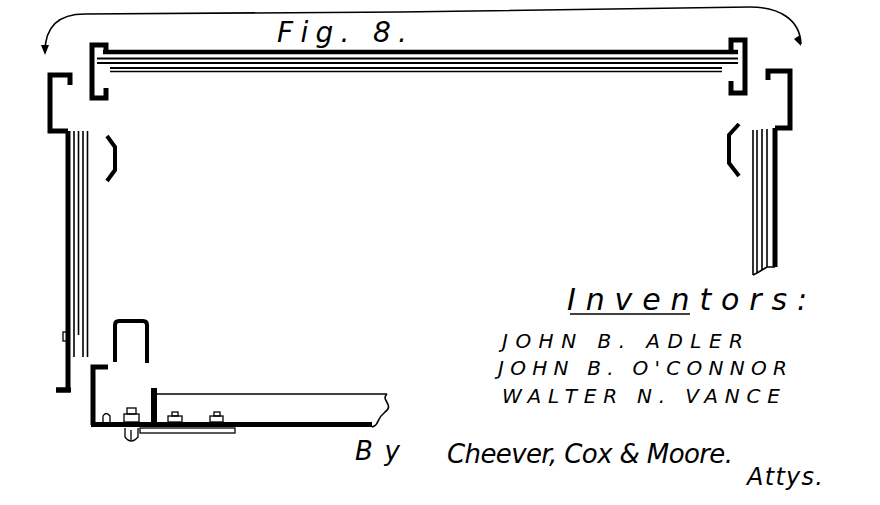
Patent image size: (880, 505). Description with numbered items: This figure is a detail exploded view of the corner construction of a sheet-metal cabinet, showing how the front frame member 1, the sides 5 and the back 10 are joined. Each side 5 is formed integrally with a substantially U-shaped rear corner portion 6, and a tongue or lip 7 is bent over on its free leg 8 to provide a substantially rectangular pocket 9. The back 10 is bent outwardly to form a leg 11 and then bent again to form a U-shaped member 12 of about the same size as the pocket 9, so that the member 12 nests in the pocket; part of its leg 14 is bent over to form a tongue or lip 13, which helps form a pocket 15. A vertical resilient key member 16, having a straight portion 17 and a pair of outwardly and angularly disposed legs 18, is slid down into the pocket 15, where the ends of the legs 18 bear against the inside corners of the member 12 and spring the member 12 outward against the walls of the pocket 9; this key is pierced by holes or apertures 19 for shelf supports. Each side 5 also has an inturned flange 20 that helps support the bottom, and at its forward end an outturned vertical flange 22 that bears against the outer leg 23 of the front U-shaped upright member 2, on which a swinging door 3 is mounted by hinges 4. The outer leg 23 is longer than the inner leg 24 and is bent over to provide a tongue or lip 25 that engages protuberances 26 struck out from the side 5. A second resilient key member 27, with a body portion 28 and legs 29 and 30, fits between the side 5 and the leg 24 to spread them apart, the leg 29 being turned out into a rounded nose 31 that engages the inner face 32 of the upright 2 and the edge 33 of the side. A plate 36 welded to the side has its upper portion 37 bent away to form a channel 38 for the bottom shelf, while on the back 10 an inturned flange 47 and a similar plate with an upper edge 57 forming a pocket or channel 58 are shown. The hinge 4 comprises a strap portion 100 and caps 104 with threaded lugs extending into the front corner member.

The front frame member 1 is at (111, 430).
The U-shaped upright member 2 is at (100, 428).
The swinging door 3 is at (300, 428).
The hinge 4 is at (202, 436).
The side 5 is at (67, 260).
The U-shaped rear corner portion 6 is at (48, 100).
The tongue or lip 7 is at (72, 83).
The free leg 8 is at (415, 56).
The rectangular pocket 9 is at (58, 119).
The back 10 is at (482, 50).
The leg 11 is at (106, 45).
The U-shaped portion or member 12 is at (421, 31).
The tongue or lip 13 is at (108, 96).
The leg 14 is at (100, 103).
The pocket 15 is at (100, 80).
The resilient key member 16 is at (118, 173).
The straight portion 17 is at (118, 148).
The legs 18 is at (113, 140).
The holes or apertures 19 is at (118, 160).
The inturned flange 20 is at (88, 271).
The outturned vertical flange 22 is at (60, 386).
The outer leg 23 is at (92, 413).
The inner leg 24 is at (157, 392).
The tongue or lip 25 is at (100, 363).
The protuberances 26 is at (67, 335).
The resilient key member 27 is at (153, 331).
The body portion 28 is at (142, 320).
The leg 29 is at (118, 345).
The leg 30 is at (148, 360).
The rounded nose 31 is at (117, 362).
The inner face 32 is at (104, 432).
The edge 33 is at (78, 395).
The plate 36 is at (777, 158).
The upper portion 37 is at (78, 241).
The channel 38 is at (73, 219).
The inturned flange 47 is at (385, 72).
The upper edge 57 is at (510, 60).
The pocket or channel 58 is at (457, 55).
The strap portion 100 is at (225, 434).
The cap 104 is at (133, 443).